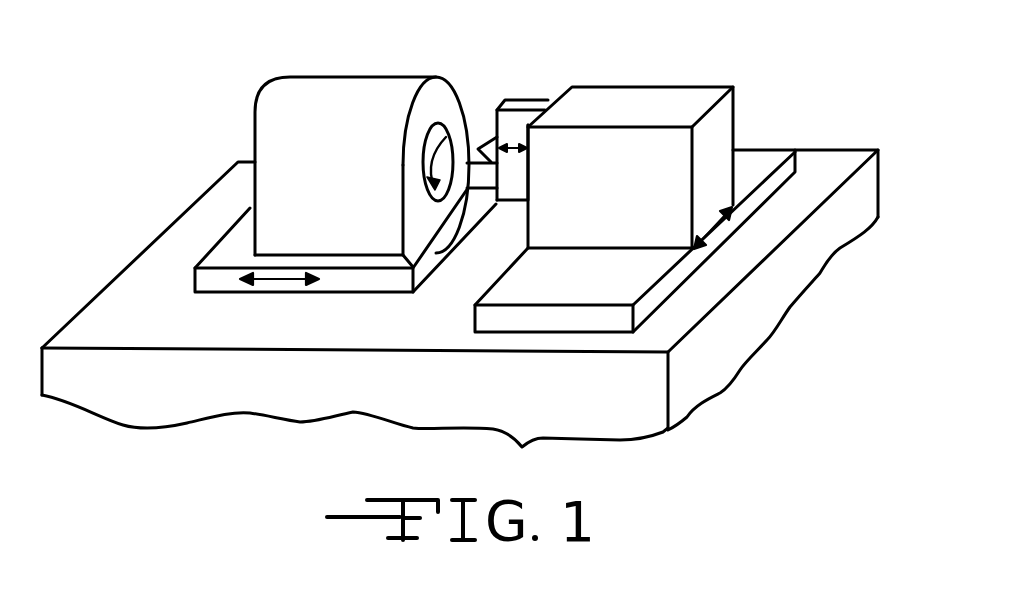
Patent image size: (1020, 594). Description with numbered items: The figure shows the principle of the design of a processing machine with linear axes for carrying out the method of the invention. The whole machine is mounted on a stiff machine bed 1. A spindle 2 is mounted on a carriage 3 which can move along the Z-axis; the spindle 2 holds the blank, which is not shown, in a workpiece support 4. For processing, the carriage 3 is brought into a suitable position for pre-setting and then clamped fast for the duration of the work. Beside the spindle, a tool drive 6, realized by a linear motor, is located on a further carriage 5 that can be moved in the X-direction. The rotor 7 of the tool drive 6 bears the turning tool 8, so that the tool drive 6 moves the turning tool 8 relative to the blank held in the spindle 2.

The machine bed 1 is at (684, 397).
The spindle 2 is at (272, 115).
The carriage 3 is at (200, 279).
The workpiece support 4 is at (437, 84).
The further carriage 5 is at (653, 295).
The tool drive 6 is at (697, 103).
The rotor 7 is at (522, 120).
The turning tool 8 is at (485, 143).